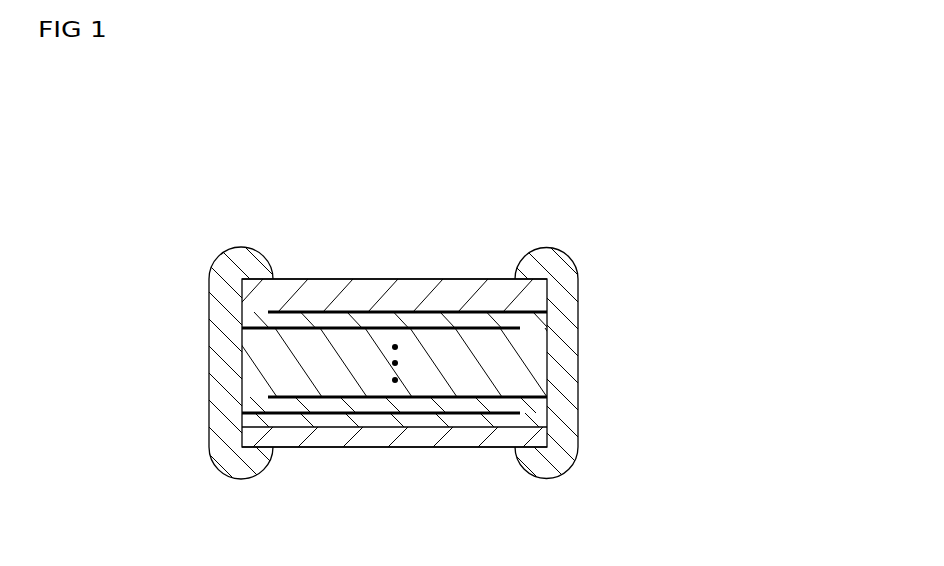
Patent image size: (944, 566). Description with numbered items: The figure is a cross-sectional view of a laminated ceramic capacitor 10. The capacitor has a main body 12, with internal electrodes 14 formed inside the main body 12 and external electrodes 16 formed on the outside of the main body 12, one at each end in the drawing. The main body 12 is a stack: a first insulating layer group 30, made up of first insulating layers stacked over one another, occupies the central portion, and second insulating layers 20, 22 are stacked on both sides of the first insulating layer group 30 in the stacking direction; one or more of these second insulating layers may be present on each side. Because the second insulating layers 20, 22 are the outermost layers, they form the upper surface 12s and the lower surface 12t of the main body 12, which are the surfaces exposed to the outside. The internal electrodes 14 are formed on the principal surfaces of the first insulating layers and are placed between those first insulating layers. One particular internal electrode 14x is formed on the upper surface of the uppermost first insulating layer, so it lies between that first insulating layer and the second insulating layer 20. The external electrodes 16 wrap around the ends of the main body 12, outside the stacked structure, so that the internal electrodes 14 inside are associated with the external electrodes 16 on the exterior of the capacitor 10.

The laminated ceramic capacitor 10 is at (667, 238).
The main body 12 is at (690, 305).
The upper surface 12s is at (431, 279).
The lower surface 12t is at (390, 447).
The internal electrodes 14 is at (300, 396).
The internal electrode 14x is at (307, 312).
The external electrodes 16 is at (214, 309).
The second insulating layer 20 is at (533, 297).
The second insulating layer 22 is at (540, 440).
The first insulating layer group 30 is at (520, 357).